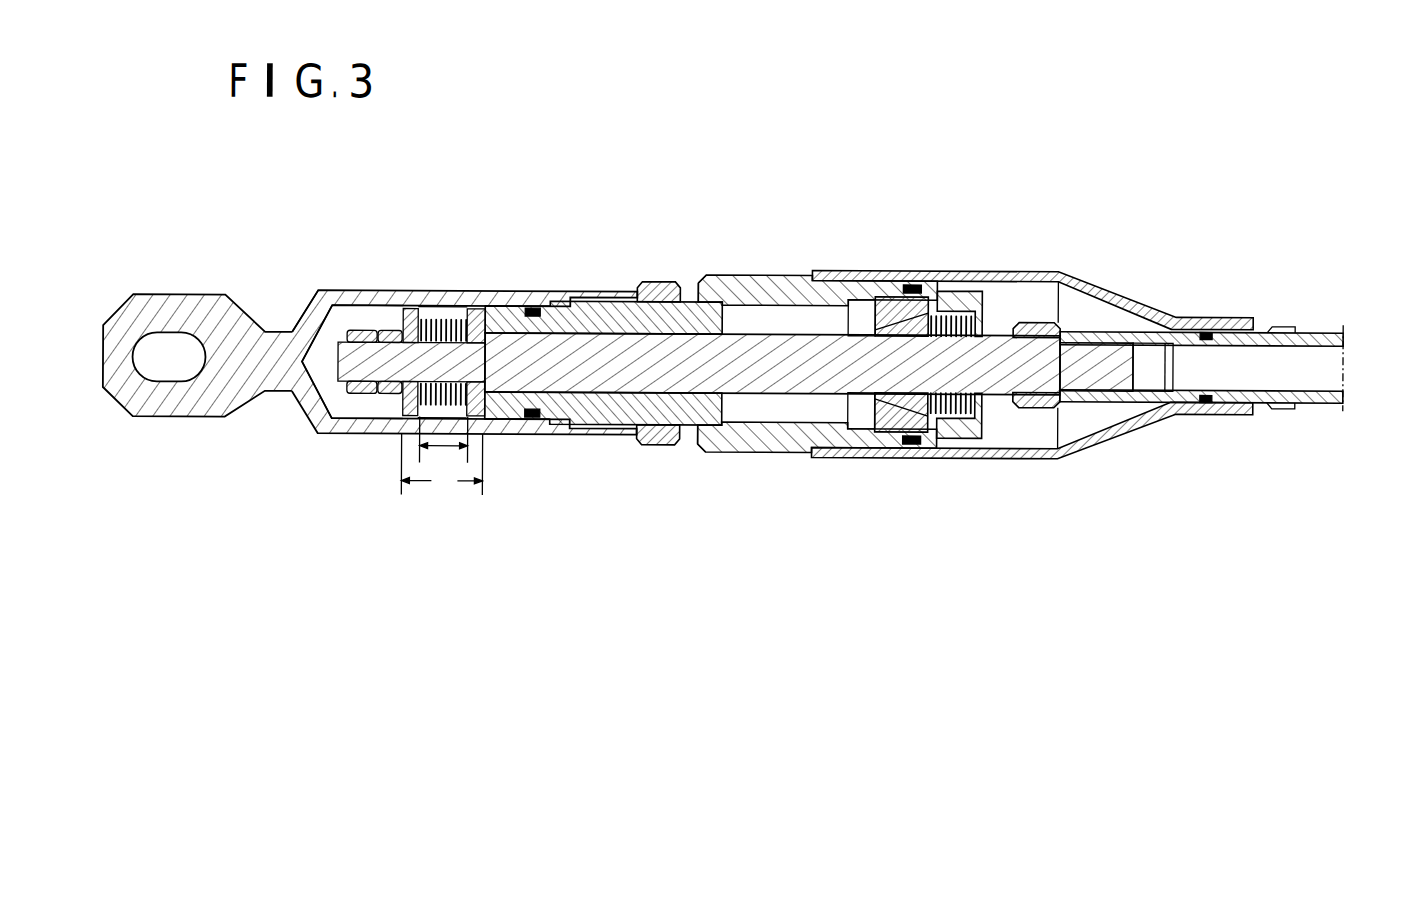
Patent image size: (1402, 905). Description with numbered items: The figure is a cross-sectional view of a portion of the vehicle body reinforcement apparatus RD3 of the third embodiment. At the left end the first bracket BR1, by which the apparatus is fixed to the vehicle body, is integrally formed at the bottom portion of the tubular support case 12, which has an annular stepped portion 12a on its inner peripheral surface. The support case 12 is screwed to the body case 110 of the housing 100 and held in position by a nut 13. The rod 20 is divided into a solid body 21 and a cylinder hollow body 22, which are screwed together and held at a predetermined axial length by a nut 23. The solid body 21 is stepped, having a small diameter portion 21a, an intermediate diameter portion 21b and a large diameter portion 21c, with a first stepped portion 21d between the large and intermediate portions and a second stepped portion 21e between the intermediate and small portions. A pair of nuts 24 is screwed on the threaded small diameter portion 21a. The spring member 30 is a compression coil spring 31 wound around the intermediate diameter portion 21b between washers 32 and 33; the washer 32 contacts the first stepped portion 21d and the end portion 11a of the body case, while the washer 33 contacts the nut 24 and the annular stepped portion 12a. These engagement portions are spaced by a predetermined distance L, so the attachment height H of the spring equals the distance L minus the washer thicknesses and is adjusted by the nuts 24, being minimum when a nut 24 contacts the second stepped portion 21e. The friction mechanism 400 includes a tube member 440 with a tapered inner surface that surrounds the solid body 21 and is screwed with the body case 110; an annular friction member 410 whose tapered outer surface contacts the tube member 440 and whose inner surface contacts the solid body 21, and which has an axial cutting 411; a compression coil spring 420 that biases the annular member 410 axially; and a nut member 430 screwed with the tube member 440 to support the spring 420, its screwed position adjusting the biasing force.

The first bracket BR1 is at (218, 296).
The support case 12 is at (307, 416).
The annular stepped portion 12a is at (400, 306).
The nuts 24 is at (333, 290).
The second stepped portion 21e is at (352, 292).
The end portion of the body case 11a is at (500, 306).
The washer 33 is at (408, 307).
The washer 32 is at (480, 307).
The compression coil spring 31 is at (444, 307).
The spring member 30 is at (435, 318).
The small diameter portion 21a is at (330, 417).
The intermediate diameter portion 21b is at (387, 414).
The large diameter portion 21c is at (573, 371).
The first stepped portion 21d is at (530, 306).
The rod 20 is at (816, 391).
The solid body 21 is at (724, 375).
The nut 13 is at (655, 444).
The housing 100 is at (787, 450).
The body case 110 is at (755, 441).
The annular friction member 410 is at (920, 283).
The friction mechanism 400 is at (986, 298).
The tube member 440 is at (890, 408).
The cutting 411 is at (911, 403).
The compression coil spring 420 is at (953, 432).
The nut member 430 is at (978, 428).
The nut 23 is at (1037, 405).
The cylinder hollow body 22 is at (1283, 399).
The vehicle body reinforcement apparatus RD3 is at (608, 254).
The attachment height H is at (443, 445).
The predetermined distance L is at (441, 465).